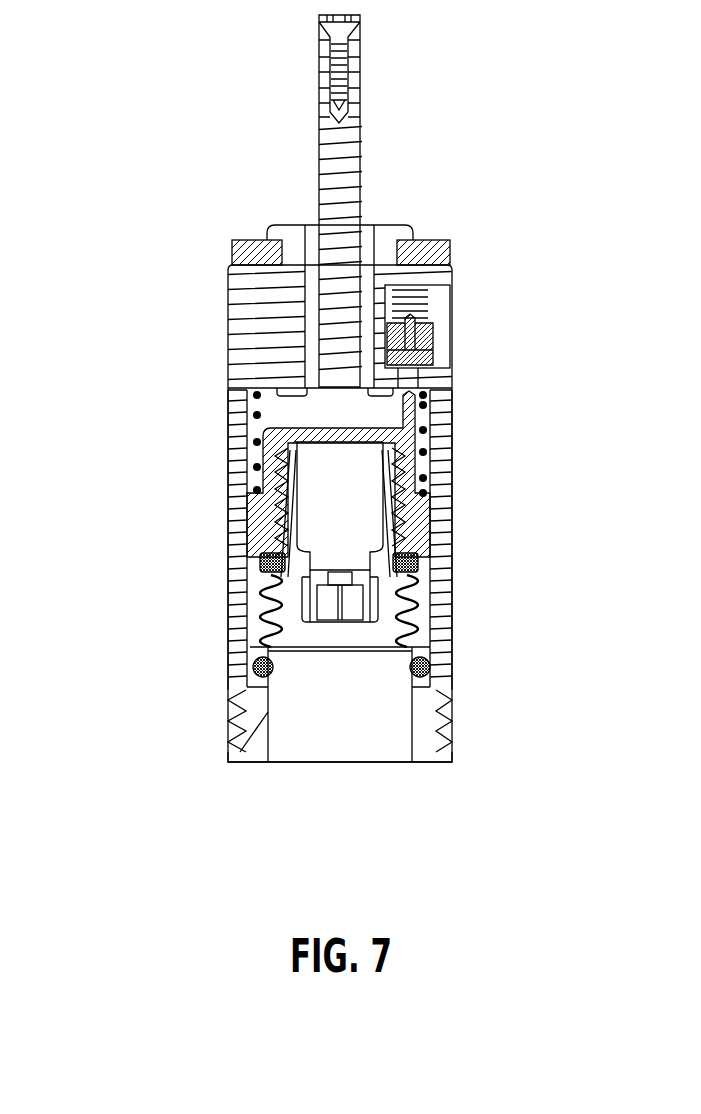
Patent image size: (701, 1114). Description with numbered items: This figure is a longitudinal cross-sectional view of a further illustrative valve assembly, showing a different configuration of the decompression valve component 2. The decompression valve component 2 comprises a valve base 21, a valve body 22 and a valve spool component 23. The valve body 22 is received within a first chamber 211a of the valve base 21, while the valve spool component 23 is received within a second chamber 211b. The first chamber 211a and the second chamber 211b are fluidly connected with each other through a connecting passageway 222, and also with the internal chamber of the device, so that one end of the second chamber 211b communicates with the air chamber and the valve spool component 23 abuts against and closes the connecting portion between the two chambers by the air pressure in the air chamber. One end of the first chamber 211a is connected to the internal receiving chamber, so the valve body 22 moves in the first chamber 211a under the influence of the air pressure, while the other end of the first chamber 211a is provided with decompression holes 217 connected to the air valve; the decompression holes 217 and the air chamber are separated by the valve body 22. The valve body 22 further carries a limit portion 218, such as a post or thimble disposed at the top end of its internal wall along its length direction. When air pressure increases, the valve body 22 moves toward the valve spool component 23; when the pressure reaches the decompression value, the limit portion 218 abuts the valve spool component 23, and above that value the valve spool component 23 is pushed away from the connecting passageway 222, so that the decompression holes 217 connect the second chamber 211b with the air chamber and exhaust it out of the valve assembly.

The decompression valve component 2 is at (192, 192).
The valve base 21 is at (250, 358).
The decompression holes 217 is at (308, 268).
The first chamber 211a is at (263, 427).
The second chamber 211b is at (440, 307).
The valve spool component 23 is at (435, 350).
The connecting passageway 222 is at (412, 383).
The limit portion 218 is at (425, 420).
The valve body 22 is at (430, 532).